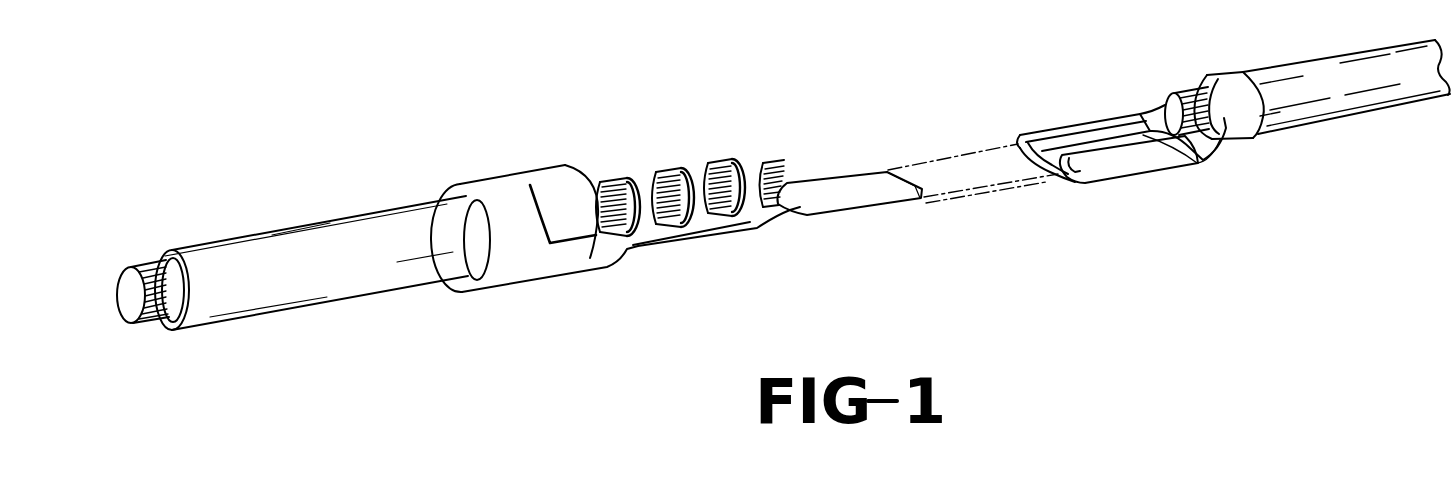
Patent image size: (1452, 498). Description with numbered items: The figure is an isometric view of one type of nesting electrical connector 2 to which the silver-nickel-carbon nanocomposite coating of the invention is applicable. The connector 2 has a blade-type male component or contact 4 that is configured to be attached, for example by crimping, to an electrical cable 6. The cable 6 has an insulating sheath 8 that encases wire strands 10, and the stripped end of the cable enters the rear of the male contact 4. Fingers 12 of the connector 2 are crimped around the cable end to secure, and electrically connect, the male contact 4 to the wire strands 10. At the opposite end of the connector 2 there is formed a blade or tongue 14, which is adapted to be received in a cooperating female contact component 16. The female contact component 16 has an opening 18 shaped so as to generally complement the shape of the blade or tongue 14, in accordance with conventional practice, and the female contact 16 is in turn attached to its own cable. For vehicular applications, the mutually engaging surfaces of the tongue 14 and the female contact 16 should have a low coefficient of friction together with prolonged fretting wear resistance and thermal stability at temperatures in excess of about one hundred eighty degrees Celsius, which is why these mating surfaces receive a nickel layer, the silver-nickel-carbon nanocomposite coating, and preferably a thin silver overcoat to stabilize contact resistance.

The nesting electrical connector 2 is at (968, 131).
The blade-type male component/contact 4 is at (834, 156).
The electrical cable 6 is at (352, 206).
The insulating sheath 8 is at (287, 277).
The wire strands 10 is at (156, 323).
The fingers 12 is at (735, 165).
The blade or tongue 14 is at (847, 197).
The female contact component 16 is at (1100, 130).
The opening 18 is at (1068, 168).